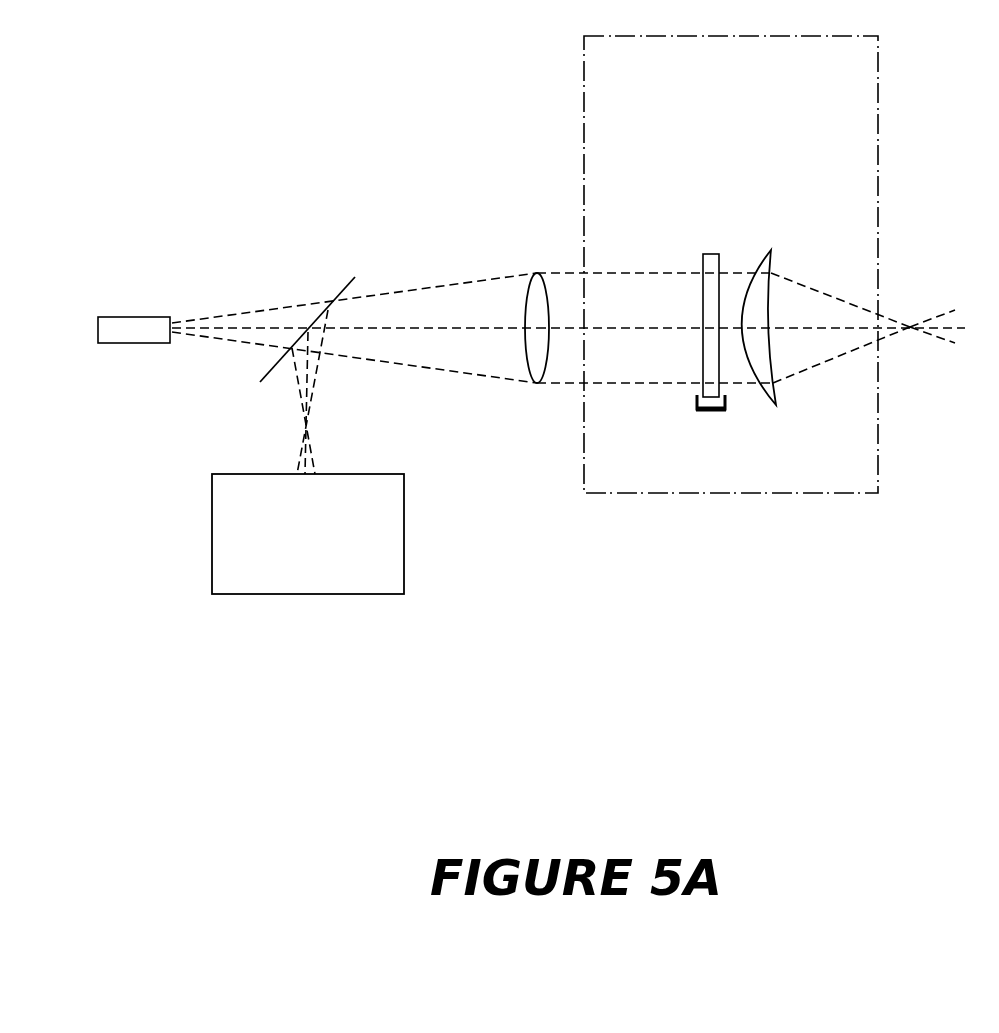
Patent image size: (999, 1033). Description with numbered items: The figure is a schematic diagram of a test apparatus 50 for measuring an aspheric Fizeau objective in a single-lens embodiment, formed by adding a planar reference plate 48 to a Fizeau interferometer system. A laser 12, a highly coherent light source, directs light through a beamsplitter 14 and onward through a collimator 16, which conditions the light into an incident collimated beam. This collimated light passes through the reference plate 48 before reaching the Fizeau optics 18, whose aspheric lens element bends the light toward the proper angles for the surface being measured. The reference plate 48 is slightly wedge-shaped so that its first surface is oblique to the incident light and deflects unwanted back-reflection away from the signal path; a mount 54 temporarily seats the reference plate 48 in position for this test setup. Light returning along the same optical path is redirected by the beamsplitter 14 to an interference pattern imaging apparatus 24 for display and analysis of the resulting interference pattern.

The test apparatus 50 is at (192, 87).
The laser 12 is at (138, 317).
The beamsplitter 14 is at (347, 281).
The collimator 16 is at (537, 273).
The Fizeau optics 18 is at (772, 250).
The interference pattern imaging apparatus 24 is at (404, 503).
The planar reference plate 48 is at (713, 254).
The mount 54 is at (697, 405).